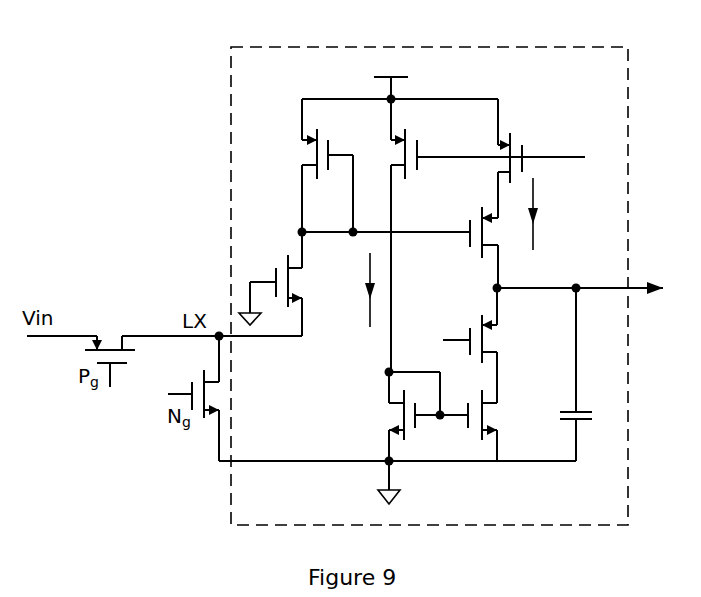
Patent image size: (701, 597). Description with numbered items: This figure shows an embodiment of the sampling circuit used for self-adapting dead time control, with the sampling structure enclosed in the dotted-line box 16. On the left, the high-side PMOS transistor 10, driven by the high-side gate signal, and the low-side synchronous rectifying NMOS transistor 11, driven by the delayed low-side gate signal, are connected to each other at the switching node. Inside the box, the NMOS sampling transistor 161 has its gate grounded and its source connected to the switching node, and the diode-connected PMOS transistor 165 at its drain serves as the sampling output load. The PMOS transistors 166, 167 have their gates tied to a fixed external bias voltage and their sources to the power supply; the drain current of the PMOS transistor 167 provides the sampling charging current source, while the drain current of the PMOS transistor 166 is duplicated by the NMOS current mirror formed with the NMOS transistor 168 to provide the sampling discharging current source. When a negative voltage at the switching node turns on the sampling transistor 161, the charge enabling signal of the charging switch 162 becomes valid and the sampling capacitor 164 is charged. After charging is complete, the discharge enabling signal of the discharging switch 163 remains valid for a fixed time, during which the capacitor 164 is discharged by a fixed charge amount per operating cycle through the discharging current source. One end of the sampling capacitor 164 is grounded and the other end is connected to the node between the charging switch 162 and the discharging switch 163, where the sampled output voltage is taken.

The box enclosed by dotted lines 16 is at (490, 47).
The high-side PMOS transistor 10 is at (110, 328).
The synchronous rectifying NMOS transistor 11 is at (196, 375).
The sampling transistor 161 is at (280, 262).
The charging switch 162 is at (476, 213).
The discharging switch 163 is at (475, 318).
The sampling capacitor 164 is at (578, 405).
The sampling output load 165 is at (297, 143).
The PMOS transistor 166 is at (383, 143).
The PMOS transistor 167 is at (492, 147).
The NMOS current mirror transistor 168 is at (470, 393).